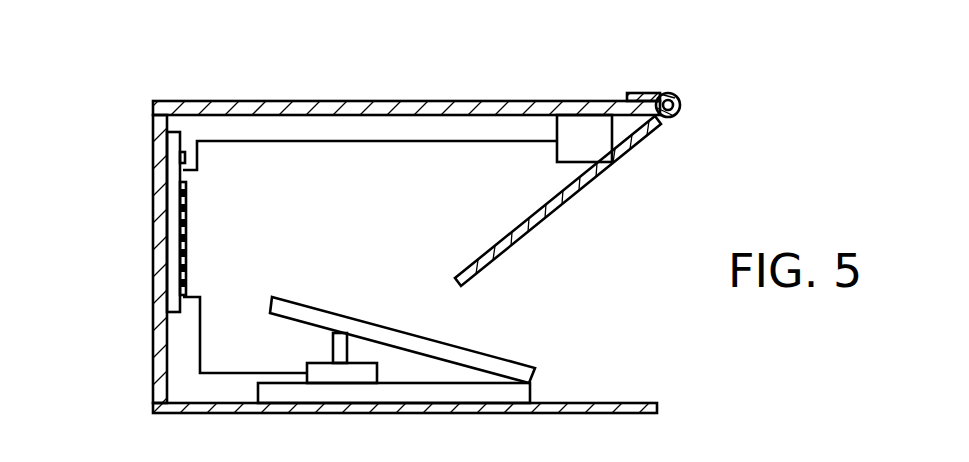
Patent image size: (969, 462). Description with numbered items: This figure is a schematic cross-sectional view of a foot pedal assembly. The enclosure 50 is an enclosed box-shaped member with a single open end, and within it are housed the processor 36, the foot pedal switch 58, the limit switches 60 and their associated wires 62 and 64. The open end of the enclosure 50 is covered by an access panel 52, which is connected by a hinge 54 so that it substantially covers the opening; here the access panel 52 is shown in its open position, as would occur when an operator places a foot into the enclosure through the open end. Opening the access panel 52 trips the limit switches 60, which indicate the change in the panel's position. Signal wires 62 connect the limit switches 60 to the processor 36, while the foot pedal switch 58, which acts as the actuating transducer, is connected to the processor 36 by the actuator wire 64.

The processor 36 is at (166, 246).
The enclosure 50 is at (372, 101).
The access panel 52 is at (502, 236).
The hinge 54 is at (680, 95).
The foot pedal switch 58 is at (497, 352).
The limit switches 60 is at (584, 135).
The signal wires 62 is at (316, 143).
The actuator wire 64 is at (225, 372).